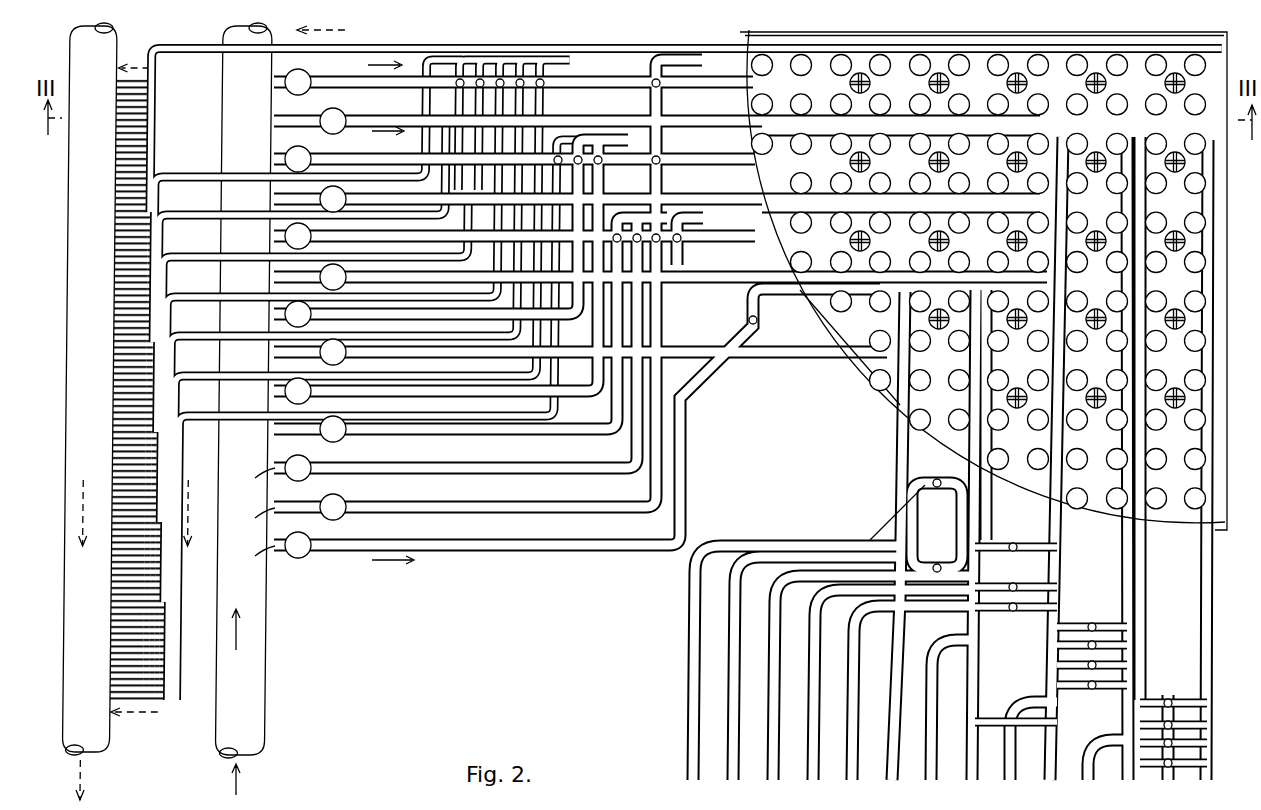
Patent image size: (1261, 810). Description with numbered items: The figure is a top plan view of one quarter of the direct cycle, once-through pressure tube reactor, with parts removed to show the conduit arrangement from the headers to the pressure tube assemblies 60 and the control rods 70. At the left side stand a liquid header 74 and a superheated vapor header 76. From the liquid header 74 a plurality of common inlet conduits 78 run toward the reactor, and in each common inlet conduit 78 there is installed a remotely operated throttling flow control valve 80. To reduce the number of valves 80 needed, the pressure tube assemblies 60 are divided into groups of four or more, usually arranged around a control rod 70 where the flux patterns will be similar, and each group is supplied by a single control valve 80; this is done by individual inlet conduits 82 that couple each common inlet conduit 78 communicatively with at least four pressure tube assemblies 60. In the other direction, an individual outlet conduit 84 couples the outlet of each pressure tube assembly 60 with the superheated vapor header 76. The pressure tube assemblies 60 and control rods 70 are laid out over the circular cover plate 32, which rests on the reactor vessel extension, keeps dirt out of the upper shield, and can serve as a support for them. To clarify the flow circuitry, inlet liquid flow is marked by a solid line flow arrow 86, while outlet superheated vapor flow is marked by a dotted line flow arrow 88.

The circular cover plate 32 is at (864, 370).
The pressure tube assemblies 60 is at (764, 78).
The control rods 70 is at (932, 330).
The liquid header 74 is at (273, 742).
The superheated vapor header 76 is at (118, 742).
The common inlet conduits 78 is at (526, 542).
The throttling flow control valve 80 is at (334, 518).
The individual inlet conduits 82 is at (544, 90).
The individual outlet conduit 84 is at (402, 38).
The solid line flow arrow 86 is at (364, 70).
The dotted line flow arrow 88 is at (330, 30).